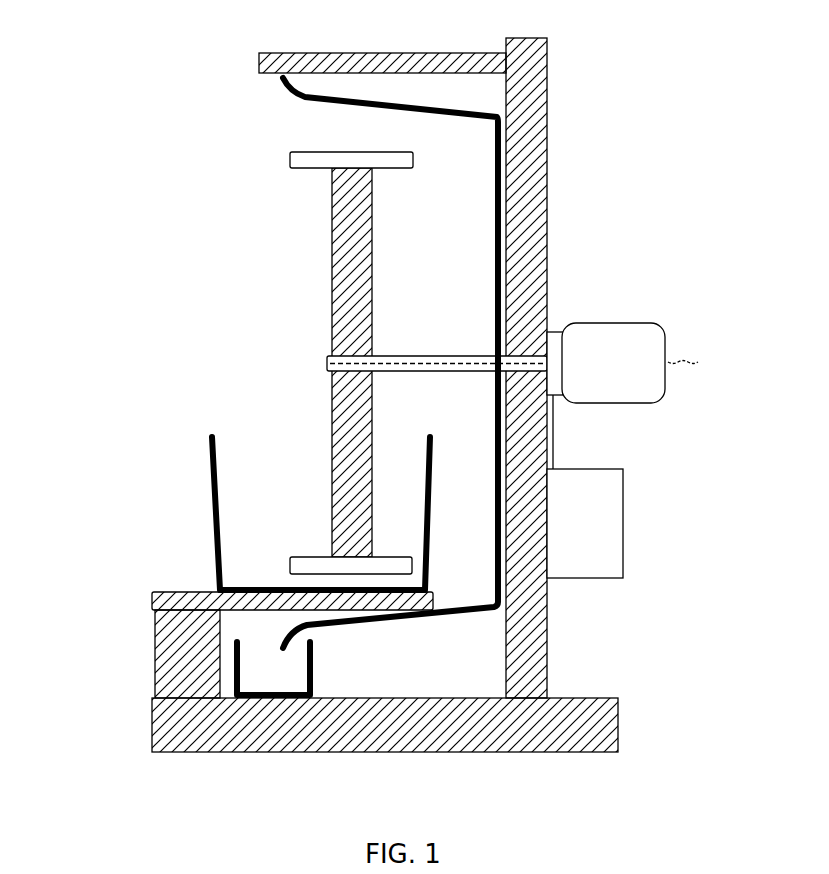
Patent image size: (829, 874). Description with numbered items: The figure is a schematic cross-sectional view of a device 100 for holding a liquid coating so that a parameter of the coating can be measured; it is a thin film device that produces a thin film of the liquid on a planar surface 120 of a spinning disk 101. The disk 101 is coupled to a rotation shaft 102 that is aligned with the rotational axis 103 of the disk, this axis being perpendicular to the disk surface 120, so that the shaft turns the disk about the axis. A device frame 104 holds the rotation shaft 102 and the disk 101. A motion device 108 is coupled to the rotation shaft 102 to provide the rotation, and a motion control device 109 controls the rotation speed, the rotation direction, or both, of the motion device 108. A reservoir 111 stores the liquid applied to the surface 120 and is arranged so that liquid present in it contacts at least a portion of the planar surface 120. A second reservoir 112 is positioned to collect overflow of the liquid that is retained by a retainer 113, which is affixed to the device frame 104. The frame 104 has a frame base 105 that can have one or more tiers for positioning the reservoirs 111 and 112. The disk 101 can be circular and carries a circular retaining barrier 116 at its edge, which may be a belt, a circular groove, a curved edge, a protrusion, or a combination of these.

The device 100 is at (138, 82).
The spinning disk 101 is at (332, 443).
The rotation shaft 102 is at (383, 353).
The rotational axis 103 is at (670, 362).
The device frame 104 is at (560, 178).
The frame base 105 is at (155, 640).
The motion device 108 is at (632, 372).
The motion control device 109 is at (600, 537).
The reservoir 111 is at (215, 517).
The reservoir 112 is at (313, 663).
The retainer 113 is at (412, 628).
The circular retaining barrier 116 is at (367, 150).
The planar surface 120 is at (333, 478).